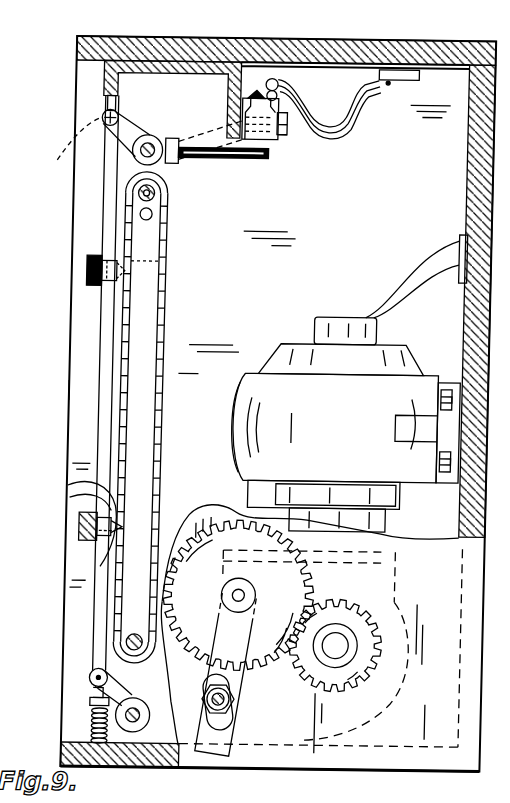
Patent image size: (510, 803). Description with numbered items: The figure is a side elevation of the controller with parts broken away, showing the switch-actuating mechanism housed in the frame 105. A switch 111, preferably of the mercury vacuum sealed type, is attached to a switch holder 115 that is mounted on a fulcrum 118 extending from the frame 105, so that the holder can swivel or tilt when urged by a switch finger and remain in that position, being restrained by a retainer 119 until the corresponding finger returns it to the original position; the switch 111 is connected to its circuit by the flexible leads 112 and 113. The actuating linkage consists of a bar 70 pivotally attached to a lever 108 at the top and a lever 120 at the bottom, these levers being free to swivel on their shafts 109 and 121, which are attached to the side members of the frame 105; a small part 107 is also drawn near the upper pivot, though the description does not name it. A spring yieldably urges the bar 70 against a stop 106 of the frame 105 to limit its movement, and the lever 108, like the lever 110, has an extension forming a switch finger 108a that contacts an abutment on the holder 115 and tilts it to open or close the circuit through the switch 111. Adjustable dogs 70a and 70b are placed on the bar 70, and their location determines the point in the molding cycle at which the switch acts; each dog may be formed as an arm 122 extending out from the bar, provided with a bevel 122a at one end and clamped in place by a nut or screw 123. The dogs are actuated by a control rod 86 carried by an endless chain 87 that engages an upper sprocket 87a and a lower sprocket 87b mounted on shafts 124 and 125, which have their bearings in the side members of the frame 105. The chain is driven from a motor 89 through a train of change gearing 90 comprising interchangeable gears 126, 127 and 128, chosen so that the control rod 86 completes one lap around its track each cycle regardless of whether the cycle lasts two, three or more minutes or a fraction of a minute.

The frame 105 is at (149, 50).
The stop 106 is at (108, 88).
The bracket 107 is at (106, 116).
The lever 108 is at (128, 128).
The switch finger 108a is at (242, 158).
The shaft 109 is at (135, 153).
The lever 110 is at (104, 121).
The switch 111 is at (265, 78).
The flexible lead 112 is at (300, 98).
The flexible lead 113 is at (337, 125).
The switch holder 115 is at (276, 138).
The fulcrum 118 is at (288, 125).
The retainer 119 is at (288, 134).
The lever 120 is at (122, 664).
The shaft 121 is at (149, 733).
The arm 122 is at (113, 542).
The bevel 122a is at (122, 503).
The nut or screw 123 is at (113, 535).
The shaft 124 is at (141, 192).
The shaft 125 is at (140, 640).
The interchangeable gear 126 is at (183, 668).
The interchangeable gear 127 is at (252, 660).
The interchangeable gear 128 is at (339, 688).
The bar 70 is at (106, 393).
The adjustable dog 70a is at (92, 268).
The adjustable dog 70b is at (90, 527).
The control rod 86 is at (137, 268).
The endless belt or chain 87 is at (129, 428).
The upper sprocket 87a is at (172, 217).
The lower sprocket 87b is at (128, 604).
The motor 89 is at (394, 576).
The train of change gearing 90 is at (191, 513).